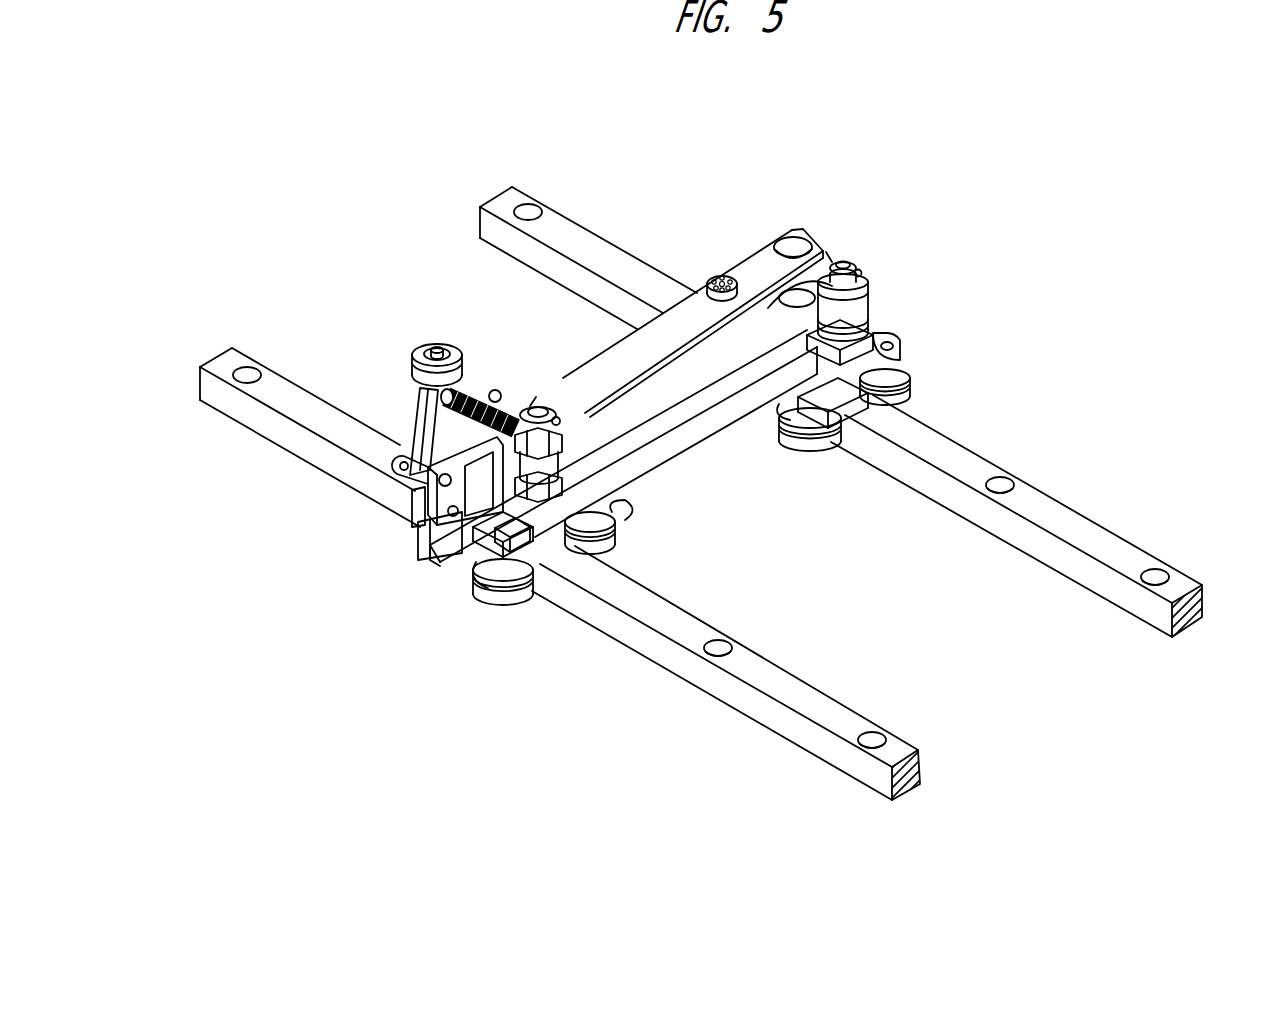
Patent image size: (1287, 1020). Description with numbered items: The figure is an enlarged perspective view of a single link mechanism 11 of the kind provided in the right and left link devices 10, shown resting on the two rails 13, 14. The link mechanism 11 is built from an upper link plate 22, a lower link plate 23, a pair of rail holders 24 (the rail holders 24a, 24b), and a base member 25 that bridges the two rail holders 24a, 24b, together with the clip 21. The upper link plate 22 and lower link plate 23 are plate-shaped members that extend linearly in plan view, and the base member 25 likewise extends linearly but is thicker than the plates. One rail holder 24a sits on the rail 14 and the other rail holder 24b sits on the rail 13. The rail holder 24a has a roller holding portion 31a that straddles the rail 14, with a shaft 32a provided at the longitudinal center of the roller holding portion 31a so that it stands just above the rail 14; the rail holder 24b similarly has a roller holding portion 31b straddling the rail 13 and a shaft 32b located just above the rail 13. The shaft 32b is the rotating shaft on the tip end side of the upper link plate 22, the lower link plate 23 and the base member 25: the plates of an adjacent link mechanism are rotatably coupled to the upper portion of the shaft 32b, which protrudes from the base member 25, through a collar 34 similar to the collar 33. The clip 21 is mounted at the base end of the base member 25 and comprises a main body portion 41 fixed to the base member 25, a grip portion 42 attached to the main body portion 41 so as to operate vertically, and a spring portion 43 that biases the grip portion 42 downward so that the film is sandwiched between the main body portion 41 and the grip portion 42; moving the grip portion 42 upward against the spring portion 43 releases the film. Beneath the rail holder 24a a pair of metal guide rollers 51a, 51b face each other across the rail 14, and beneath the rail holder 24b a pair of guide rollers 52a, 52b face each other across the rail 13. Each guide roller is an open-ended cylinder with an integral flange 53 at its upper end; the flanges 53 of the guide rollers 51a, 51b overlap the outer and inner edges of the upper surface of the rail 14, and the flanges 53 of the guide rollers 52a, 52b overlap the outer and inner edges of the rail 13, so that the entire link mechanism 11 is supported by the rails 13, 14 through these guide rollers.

The link device 10 is at (250, 96).
The link mechanism 11 is at (856, 192).
The rail 13 is at (1150, 640).
The rail 14 is at (870, 800).
The clip 21 is at (404, 337).
The upper link plate 22 is at (722, 272).
The lower link plate 23 is at (690, 367).
The rail holders 24 is at (779, 505).
The rail holder 24a is at (561, 647).
The rail holder 24b is at (938, 390).
The base member 25 is at (793, 376).
The roller holding portion 31a is at (565, 560).
The roller holding portion 31b is at (865, 395).
The shaft 32a is at (538, 404).
The shaft 32b is at (838, 262).
The collar 33 is at (565, 430).
The collar 34 is at (860, 322).
The main body portion 41 is at (418, 538).
The grip portion 42 is at (420, 512).
The spring portion 43 is at (477, 396).
The guide roller 51a is at (486, 590).
The guide roller 51b is at (613, 530).
The guide roller 52a is at (906, 386).
The guide roller 52b is at (803, 445).
The flange 53 is at (898, 350).